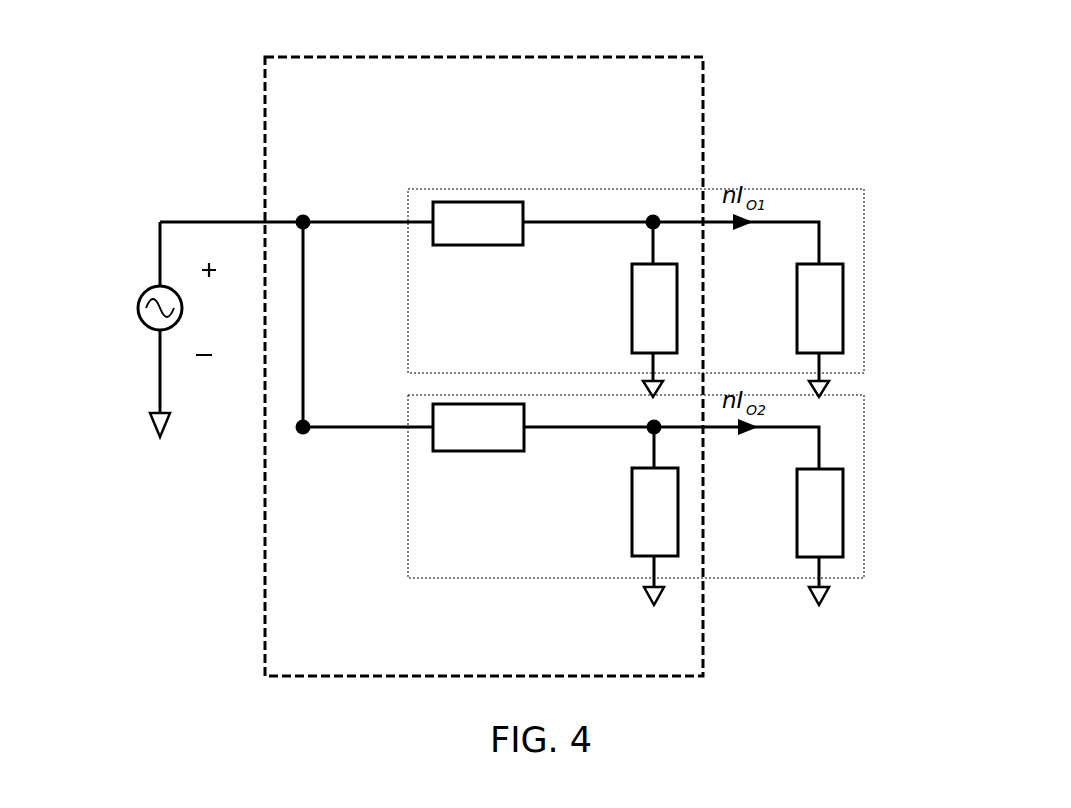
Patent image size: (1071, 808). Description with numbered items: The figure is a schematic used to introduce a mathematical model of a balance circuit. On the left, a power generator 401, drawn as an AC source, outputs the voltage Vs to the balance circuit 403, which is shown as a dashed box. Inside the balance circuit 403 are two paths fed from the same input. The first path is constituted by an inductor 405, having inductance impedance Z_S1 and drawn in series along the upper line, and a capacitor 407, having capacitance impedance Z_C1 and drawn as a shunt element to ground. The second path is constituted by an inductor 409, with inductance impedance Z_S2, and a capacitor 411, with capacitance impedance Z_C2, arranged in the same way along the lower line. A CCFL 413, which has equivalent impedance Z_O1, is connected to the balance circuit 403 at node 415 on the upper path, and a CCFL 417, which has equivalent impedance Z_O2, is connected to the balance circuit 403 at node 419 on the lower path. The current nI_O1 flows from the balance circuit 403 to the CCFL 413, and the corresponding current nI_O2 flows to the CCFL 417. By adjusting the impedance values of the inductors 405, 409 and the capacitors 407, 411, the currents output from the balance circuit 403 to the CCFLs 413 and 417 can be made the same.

The power generator 401 is at (142, 297).
The balance circuit 403 is at (325, 676).
The inductor 405 is at (488, 200).
The capacitor 407 is at (631, 300).
The inductor 409 is at (470, 452).
The capacitor 411 is at (631, 518).
The CCFL 413 is at (844, 300).
The node 415 is at (660, 215).
The CCFL 417 is at (844, 503).
The node 419 is at (661, 430).